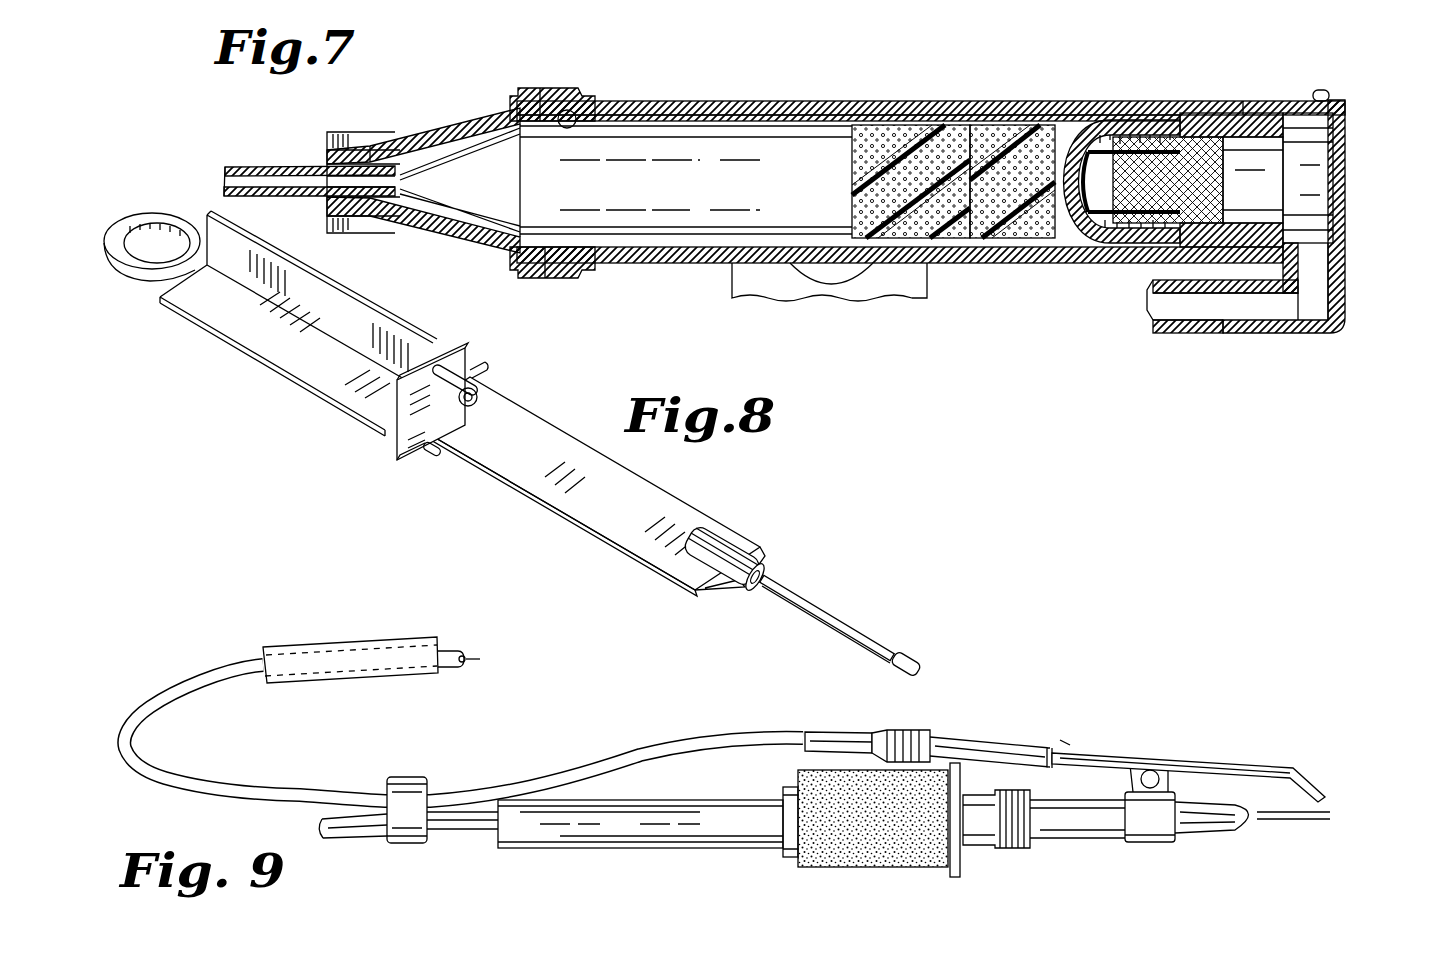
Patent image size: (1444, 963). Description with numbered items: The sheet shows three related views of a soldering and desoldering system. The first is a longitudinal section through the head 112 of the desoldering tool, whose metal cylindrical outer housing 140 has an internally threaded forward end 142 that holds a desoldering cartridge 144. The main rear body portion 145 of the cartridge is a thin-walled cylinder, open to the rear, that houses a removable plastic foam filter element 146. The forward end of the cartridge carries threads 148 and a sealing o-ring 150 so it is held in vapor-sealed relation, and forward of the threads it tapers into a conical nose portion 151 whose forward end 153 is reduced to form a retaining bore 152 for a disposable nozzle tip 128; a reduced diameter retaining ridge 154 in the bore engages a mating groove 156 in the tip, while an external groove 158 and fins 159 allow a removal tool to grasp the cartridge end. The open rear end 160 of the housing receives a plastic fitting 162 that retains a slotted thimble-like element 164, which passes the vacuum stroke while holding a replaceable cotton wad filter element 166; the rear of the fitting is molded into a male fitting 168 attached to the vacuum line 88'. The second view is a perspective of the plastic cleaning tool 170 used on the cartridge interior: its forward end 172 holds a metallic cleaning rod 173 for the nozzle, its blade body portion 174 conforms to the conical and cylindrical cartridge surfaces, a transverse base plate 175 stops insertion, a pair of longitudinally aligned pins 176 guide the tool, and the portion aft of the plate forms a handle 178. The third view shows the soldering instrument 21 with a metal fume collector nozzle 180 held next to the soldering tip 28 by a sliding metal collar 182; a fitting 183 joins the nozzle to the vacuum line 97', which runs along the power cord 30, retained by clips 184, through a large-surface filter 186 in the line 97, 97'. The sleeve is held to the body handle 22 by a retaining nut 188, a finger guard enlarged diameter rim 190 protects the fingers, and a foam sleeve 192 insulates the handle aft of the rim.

In FIG. 7, the head 112 is at (795, 65).
In FIG. 7, the desoldering cartridge 144 is at (667, 108).
In FIG. 7, the metal cylindrical outer housing 140 is at (730, 112).
In FIG. 7, the main rear body portion 145 is at (903, 110).
In FIG. 7, the plastic foam filter element 146 is at (1017, 125).
In FIG. 7, the thimble-like element 164 is at (1103, 126).
In FIG. 7, the cotton wad filter element 166 is at (1223, 177).
In FIG. 7, the rear end 160 is at (1243, 101).
In FIG. 7, the plastic fitting 162 is at (1320, 92).
In FIG. 7, the male fitting 168 is at (1346, 330).
In FIG. 7, the vacuum line 88' is at (1222, 344).
In FIG. 7, the sealing o-ring 150 is at (520, 100).
In FIG. 7, the threads 148 is at (543, 100).
In FIG. 7, the internally threaded forward end 142 is at (570, 107).
In FIG. 7, the conical nose portion 151 is at (457, 127).
In FIG. 7, the reduced diameter retaining ridge 154 is at (400, 178).
In FIG. 7, the fins 159 is at (353, 132).
In FIG. 7, the forward end 153 is at (370, 147).
In FIG. 7, the retaining bore 152 is at (327, 208).
In FIG. 7, the mating groove 156 is at (368, 200).
In FIG. 7, the disposable nozzle tip 128 is at (243, 166).
In FIG. 7, the groove 158 is at (327, 166).
In FIG. 8, the plastic cleaning tool 170 is at (578, 414).
In FIG. 8, the handle 178 is at (285, 373).
In FIG. 8, the blade body portion 174 is at (540, 498).
In FIG. 8, the transverse base plate 175 is at (465, 352).
In FIG. 8, the longitudinally aligned pins 176 is at (480, 396).
In FIG. 8, the forward end 172 is at (733, 530).
In FIG. 8, the metallic cleaning rod 173 is at (850, 628).
In FIG. 9, the vacuum line 97' is at (463, 729).
In FIG. 9, the large-surface filter 186 is at (335, 640).
In FIG. 9, the fume collector vacuum line 97 is at (519, 639).
In FIG. 9, the power cord 30 is at (362, 838).
In FIG. 9, the clips 184 is at (430, 843).
In FIG. 9, the body handle 22 is at (678, 800).
In FIG. 9, the foam sleeve 192 is at (800, 868).
In FIG. 9, the finger guard enlarged diameter rim 190 is at (952, 876).
In FIG. 9, the retaining nut 188 is at (990, 850).
In FIG. 9, the metal collar 182 is at (1155, 843).
In FIG. 9, the soldering tip 28 is at (1285, 822).
In FIG. 9, the fitting 183 is at (905, 731).
In FIG. 9, the metal fume collector nozzle 180 is at (1312, 782).
In FIG. 9, the soldering instrument 21 is at (1064, 734).